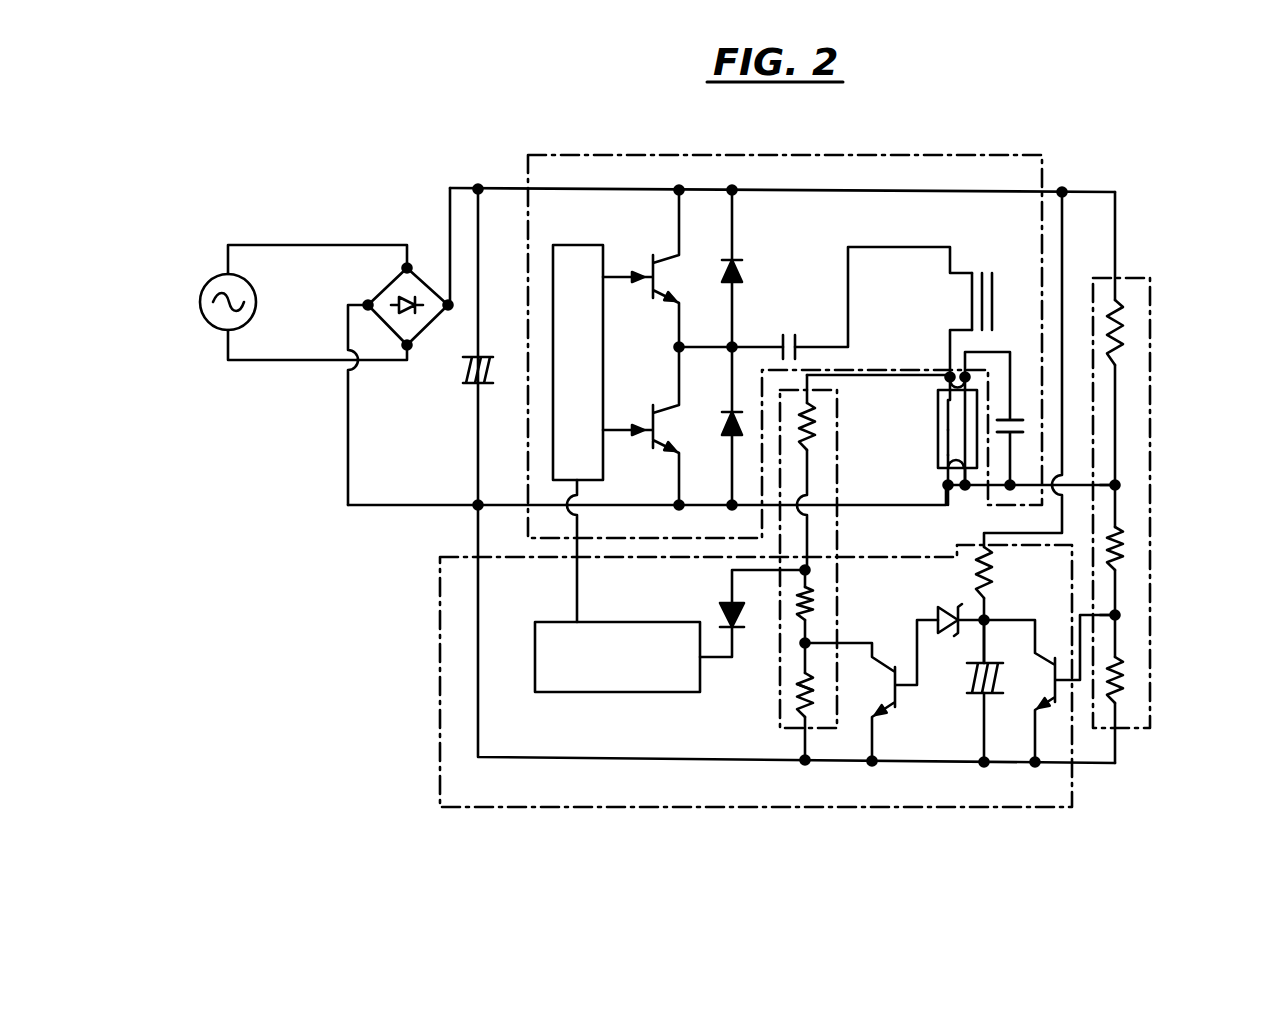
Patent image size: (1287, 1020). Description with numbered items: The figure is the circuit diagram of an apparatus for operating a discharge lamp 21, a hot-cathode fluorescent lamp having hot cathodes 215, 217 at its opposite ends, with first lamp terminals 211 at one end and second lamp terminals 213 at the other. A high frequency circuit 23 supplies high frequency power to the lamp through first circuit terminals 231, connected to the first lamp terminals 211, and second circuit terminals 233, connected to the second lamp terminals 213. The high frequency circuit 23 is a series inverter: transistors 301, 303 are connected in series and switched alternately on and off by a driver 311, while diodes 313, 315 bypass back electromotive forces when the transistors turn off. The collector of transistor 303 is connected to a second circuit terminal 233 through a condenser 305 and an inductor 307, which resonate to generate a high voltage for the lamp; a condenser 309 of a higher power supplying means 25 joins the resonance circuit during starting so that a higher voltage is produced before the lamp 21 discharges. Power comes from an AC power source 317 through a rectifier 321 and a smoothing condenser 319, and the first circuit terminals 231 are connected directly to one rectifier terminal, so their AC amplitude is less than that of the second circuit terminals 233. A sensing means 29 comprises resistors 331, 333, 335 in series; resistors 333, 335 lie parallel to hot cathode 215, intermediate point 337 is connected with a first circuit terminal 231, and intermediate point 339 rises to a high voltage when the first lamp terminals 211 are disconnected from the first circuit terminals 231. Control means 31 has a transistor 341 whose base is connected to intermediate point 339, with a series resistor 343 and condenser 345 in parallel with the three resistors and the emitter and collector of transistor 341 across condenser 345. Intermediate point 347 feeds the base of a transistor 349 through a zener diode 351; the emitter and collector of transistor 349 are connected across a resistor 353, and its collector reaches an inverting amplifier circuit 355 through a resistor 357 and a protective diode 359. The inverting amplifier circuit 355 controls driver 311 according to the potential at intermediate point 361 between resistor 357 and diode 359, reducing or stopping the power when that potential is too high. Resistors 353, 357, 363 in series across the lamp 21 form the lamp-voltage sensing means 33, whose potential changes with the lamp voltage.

The AC power source 317 is at (200, 322).
The rectifier 321 is at (432, 292).
The smoothing condenser 319 is at (463, 370).
The high frequency circuit 23 is at (838, 155).
The driver 311 is at (583, 255).
The transistor 301 is at (657, 300).
The transistor 303 is at (653, 443).
The diode 313 is at (745, 262).
The diode 315 is at (716, 418).
The condenser 305 is at (793, 330).
The inductor 307 is at (970, 272).
The condenser 309 is at (1027, 425).
The higher power supplying means 25 is at (1011, 327).
The discharge lamp 21 is at (952, 456).
The second circuit terminal 233 is at (950, 380).
The second lamp terminal 213 is at (946, 403).
The hot cathode 217 is at (940, 432).
The hot cathode 215 is at (948, 482).
The first lamp terminal 211 is at (948, 490).
The first circuit terminal 231 is at (965, 490).
The resistor 363 is at (818, 432).
The VL sensing means 33 is at (780, 695).
The control means 31 is at (567, 808).
The inverting amplifier circuit 355 is at (535, 662).
The diode 359 is at (742, 640).
The intermediate point 361 is at (812, 572).
The resistor 357 is at (812, 607).
The resistor 353 is at (793, 697).
The transistor 349 is at (893, 705).
The zener diode 351 is at (935, 632).
The resistor 343 is at (994, 575).
The condenser 345 is at (967, 690).
The intermediate point 347 is at (993, 630).
The transistor 341 is at (1050, 703).
The resistor 331 is at (1128, 330).
The intermediate point 337 is at (1118, 485).
The resistor 333 is at (1125, 553).
The intermediate point 339 is at (1120, 615).
The resistor 335 is at (1125, 685).
The sensing means 29 is at (1175, 488).